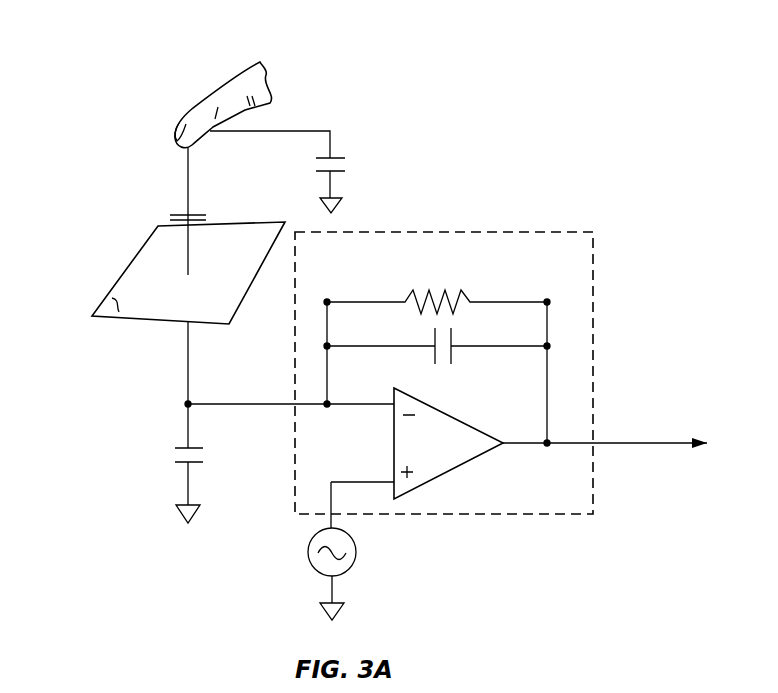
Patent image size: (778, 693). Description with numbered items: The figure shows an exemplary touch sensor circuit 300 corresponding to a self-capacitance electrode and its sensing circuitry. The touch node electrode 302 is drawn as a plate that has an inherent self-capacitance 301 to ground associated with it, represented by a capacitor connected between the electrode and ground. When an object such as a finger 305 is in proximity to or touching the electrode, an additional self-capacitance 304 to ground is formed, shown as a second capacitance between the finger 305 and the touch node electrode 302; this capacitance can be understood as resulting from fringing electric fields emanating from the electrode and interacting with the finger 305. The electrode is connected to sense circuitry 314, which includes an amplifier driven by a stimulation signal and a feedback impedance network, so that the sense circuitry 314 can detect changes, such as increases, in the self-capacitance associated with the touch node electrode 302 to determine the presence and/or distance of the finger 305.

The touch sensor circuit 300 is at (134, 72).
The inherent self-capacitance 301 is at (175, 452).
The touch node electrode 302 is at (92, 313).
The additional self-capacitance 304 is at (205, 212).
The finger 305 is at (220, 90).
The sense circuitry 314 is at (542, 230).